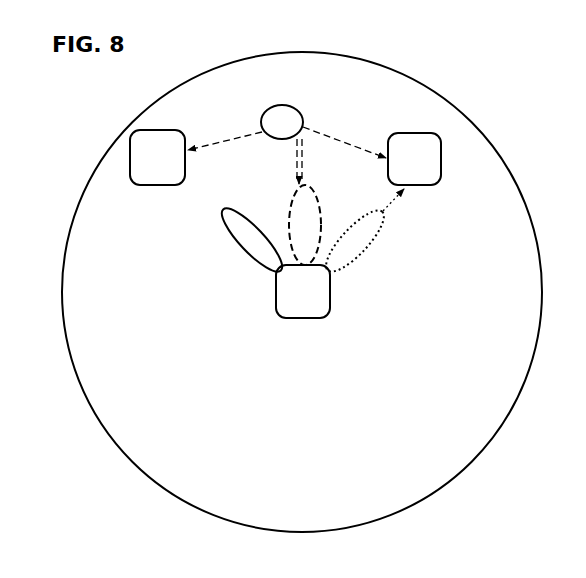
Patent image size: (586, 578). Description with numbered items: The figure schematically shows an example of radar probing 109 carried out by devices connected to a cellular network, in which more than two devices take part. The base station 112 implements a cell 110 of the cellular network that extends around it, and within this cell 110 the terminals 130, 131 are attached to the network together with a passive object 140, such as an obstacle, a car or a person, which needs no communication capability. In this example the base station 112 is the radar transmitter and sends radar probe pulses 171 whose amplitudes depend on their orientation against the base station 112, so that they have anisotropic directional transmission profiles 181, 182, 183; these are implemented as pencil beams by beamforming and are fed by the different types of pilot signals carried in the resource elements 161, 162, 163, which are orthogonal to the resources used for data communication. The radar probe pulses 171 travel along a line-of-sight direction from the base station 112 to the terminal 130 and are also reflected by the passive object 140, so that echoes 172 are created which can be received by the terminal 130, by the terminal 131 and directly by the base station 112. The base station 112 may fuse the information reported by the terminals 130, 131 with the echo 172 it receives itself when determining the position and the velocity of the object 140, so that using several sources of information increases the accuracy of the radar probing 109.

The radar probing 109 is at (486, 40).
The cell 110 is at (77, 210).
The base station 112 is at (277, 306).
The terminal 130 is at (442, 170).
The terminal 131 is at (142, 186).
The passive object 140 is at (261, 124).
The resource element 161 is at (224, 222).
The resource element 162 is at (320, 196).
The resource element 163 is at (356, 264).
The radar probe pulses 171 is at (304, 165).
The echoes 172 is at (205, 150).
The anisotropic directional transmission profile 181 is at (241, 252).
The anisotropic directional transmission profile 182 is at (290, 196).
The anisotropic directional transmission profile 183 is at (380, 241).